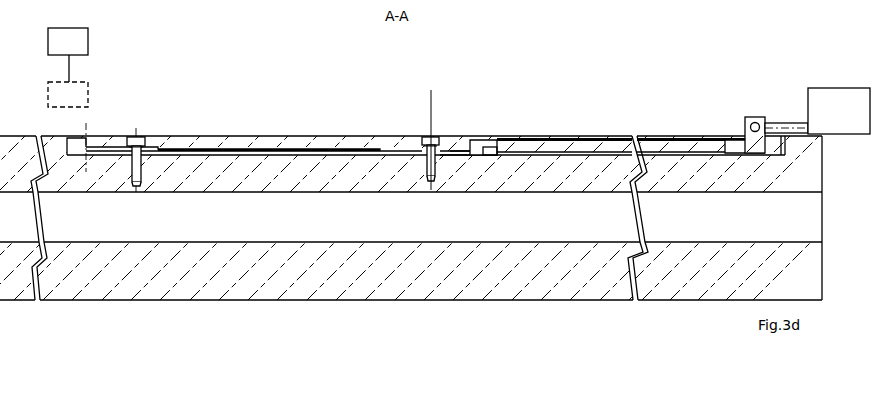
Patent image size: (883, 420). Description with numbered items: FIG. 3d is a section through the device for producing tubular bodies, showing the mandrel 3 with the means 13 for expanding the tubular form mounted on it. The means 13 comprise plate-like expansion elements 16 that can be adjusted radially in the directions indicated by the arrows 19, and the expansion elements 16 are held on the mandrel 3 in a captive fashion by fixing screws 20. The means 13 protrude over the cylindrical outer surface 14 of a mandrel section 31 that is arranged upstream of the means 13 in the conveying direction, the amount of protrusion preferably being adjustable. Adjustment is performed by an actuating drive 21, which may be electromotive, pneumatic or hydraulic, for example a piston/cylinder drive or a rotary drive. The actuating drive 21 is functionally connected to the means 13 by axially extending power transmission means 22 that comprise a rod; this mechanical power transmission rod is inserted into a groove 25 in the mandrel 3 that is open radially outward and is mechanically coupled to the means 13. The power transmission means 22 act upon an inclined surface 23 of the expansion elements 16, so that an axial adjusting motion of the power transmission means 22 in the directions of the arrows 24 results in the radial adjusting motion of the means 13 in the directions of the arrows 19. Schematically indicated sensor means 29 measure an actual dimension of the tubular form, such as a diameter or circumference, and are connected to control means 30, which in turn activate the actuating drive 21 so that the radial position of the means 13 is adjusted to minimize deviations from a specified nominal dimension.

The mandrel 3 is at (423, 278).
The means for expanding the tubular form 13 is at (249, 137).
The cylindrical outer surface 14 is at (692, 299).
The plate-like expansion element 16 is at (185, 147).
The arrows indicating radial adjustment directions 19 is at (405, 50).
The fixing screw 20 is at (134, 136).
The actuating drive 21 is at (847, 86).
The power transmission means 22 is at (500, 140).
The inclined surface 23 is at (450, 151).
The arrows indicating axial adjusting motion 24 is at (685, 115).
The groove 25 is at (775, 155).
The sensor means 29 is at (92, 93).
The control means 30 is at (92, 35).
The mandrel section 31 is at (594, 278).